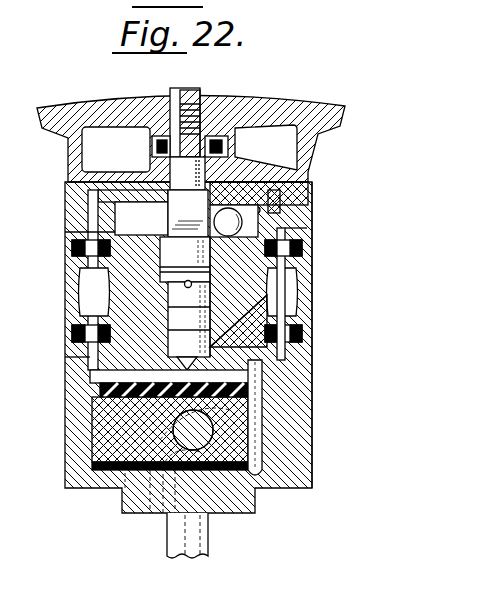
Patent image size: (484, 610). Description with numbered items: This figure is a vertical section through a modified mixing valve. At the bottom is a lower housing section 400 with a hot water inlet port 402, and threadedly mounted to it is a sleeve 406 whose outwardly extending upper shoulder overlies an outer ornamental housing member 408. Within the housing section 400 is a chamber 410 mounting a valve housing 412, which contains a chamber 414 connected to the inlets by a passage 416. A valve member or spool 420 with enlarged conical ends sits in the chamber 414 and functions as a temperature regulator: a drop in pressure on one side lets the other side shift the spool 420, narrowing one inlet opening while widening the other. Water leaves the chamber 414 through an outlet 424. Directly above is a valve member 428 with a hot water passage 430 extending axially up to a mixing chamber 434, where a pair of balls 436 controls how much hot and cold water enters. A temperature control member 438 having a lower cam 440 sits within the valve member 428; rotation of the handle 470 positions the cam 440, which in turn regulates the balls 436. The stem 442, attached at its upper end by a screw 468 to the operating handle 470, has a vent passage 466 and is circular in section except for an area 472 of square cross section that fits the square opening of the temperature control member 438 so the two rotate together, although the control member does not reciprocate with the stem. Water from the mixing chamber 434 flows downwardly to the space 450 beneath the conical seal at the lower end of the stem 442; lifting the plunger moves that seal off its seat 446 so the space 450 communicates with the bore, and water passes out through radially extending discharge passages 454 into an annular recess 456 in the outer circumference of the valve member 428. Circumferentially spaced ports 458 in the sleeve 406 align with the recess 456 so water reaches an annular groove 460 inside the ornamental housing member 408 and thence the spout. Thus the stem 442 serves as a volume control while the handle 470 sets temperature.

The lower housing section 400 is at (312, 438).
The hot water inlet port 402 is at (208, 544).
The sleeve 406 is at (71, 182).
The outer ornamental housing member 408 is at (80, 234).
The chamber 410 is at (93, 446).
The valve housing 412 is at (108, 422).
The chamber 414 is at (117, 466).
The passage 416 is at (165, 513).
The valve member or spool 420 is at (140, 482).
The outlet 424 is at (253, 508).
The valve member 428 is at (105, 352).
The hot water passage 430 is at (308, 229).
The mixing chamber 434 is at (128, 215).
The balls 436 is at (245, 231).
The temperature control member 438 is at (274, 176).
The cam 440 is at (272, 196).
The stem 442 is at (175, 170).
The seat 446 is at (210, 347).
The space 450 is at (125, 378).
The discharge passages 454 is at (137, 322).
The annular recess 456 is at (100, 270).
The ports 458 is at (92, 292).
The annular groove 460 is at (300, 275).
The vent passage 466 is at (218, 108).
The screw 468 is at (182, 92).
The operating handle 470 is at (296, 102).
The square cross-section area 472 is at (205, 190).